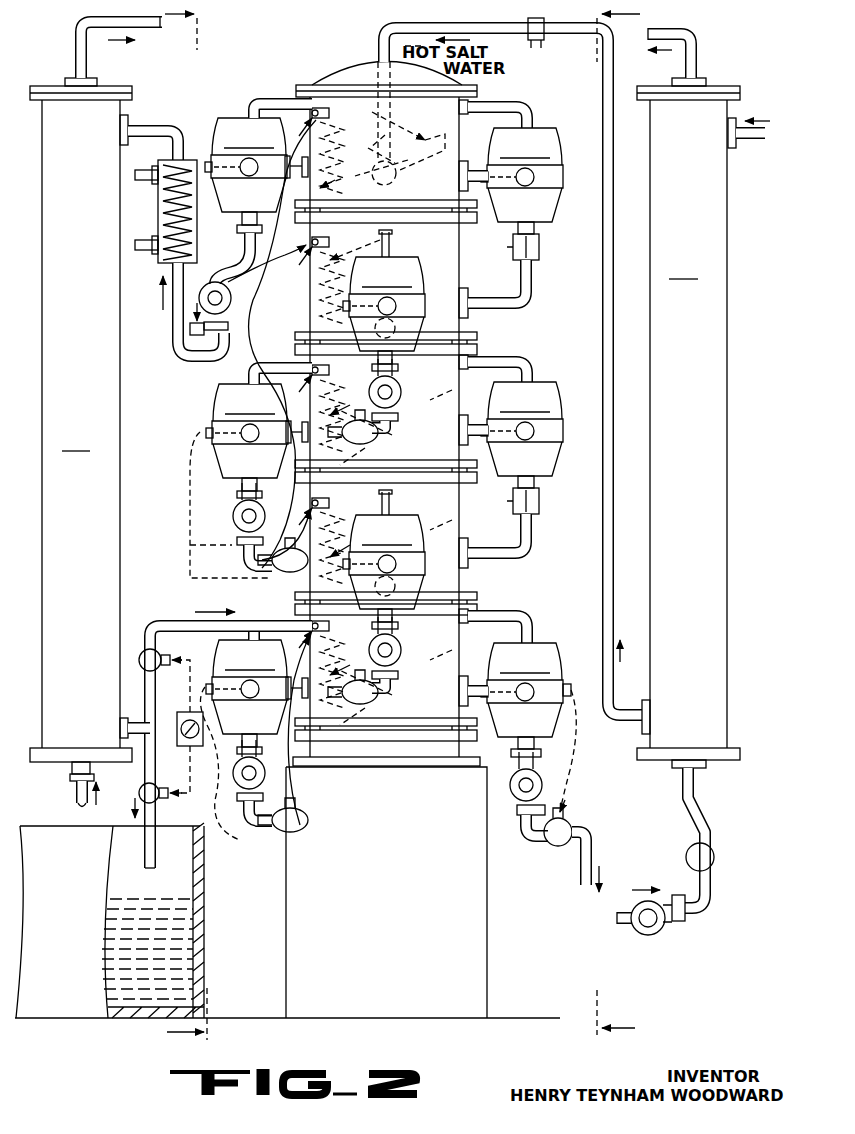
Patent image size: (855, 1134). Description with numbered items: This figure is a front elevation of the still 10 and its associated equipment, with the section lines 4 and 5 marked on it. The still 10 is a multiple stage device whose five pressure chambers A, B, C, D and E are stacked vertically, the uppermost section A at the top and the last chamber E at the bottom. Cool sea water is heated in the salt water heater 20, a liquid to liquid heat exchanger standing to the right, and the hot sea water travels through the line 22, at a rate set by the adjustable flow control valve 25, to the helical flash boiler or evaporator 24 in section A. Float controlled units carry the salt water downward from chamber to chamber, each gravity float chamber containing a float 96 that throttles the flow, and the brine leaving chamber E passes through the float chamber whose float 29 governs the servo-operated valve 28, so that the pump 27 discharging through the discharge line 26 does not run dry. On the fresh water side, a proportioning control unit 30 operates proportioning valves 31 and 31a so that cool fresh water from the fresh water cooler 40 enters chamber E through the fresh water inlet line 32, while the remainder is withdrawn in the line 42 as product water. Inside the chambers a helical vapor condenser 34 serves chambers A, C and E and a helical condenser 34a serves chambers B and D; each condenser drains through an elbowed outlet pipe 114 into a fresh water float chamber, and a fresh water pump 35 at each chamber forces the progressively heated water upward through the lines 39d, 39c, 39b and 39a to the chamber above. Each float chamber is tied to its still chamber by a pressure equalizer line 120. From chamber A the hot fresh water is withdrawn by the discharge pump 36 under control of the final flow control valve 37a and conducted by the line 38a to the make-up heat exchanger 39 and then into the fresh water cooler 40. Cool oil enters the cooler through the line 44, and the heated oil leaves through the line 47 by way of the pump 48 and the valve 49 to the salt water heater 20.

The still 10 is at (342, 62).
The salt water heater 20 is at (714, 423).
The line 22 is at (380, 26).
The helical flash boiler or evaporator 24 is at (382, 110).
The adjustable flow control valve 25 is at (545, 42).
The discharge line 26 is at (580, 870).
The pump 27 is at (511, 782).
The servo-operated valve 28 is at (550, 842).
The float 29 is at (522, 727).
The proportioning control unit 30 is at (200, 718).
The proportioning valve 31 is at (140, 660).
The proportioning valve 31a is at (140, 787).
The fresh water inlet line 32 is at (290, 624).
The helical vapor condenser 34 is at (392, 178).
The helical condenser 34a is at (393, 245).
The fresh water pump 35 is at (400, 393).
The discharge pump 36 is at (228, 288).
The final flow control valve 37a is at (196, 354).
The line 38a is at (174, 328).
The make-up heat exchanger 39 is at (158, 203).
The inlet line 39a is at (316, 110).
The inlet line 39b is at (228, 358).
The line 39c is at (232, 548).
The line 39d is at (330, 785).
The fresh water cooler 40 is at (81, 424).
The line 42 is at (146, 838).
The line 44 is at (688, 68).
The line 47 is at (77, 44).
The pump 48 is at (640, 930).
The valve 49 is at (713, 857).
The float 96 is at (515, 340).
The elbowed outlet pipe 114 is at (288, 190).
The pressure equalizer line 120 is at (262, 104).
The uppermost section A is at (458, 115).
The stage B is at (458, 270).
The stage C is at (458, 378).
The stage D is at (458, 528).
The last chamber E is at (458, 635).
The section line 4- 4 is at (608, 524).
The section line 5- 5 is at (195, 528).